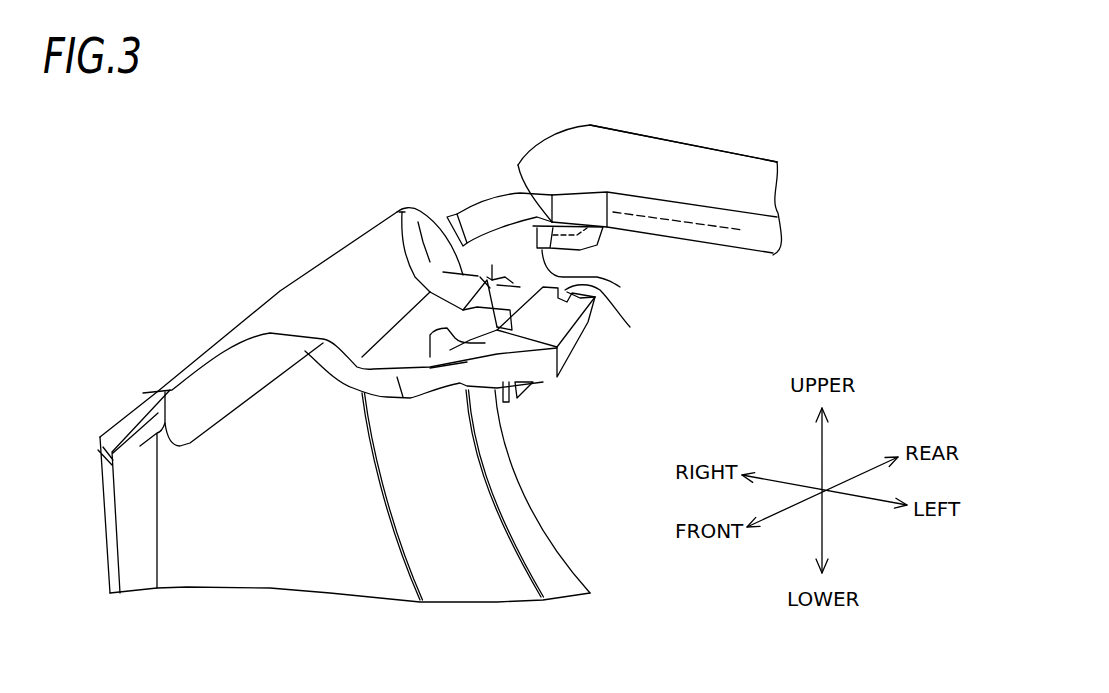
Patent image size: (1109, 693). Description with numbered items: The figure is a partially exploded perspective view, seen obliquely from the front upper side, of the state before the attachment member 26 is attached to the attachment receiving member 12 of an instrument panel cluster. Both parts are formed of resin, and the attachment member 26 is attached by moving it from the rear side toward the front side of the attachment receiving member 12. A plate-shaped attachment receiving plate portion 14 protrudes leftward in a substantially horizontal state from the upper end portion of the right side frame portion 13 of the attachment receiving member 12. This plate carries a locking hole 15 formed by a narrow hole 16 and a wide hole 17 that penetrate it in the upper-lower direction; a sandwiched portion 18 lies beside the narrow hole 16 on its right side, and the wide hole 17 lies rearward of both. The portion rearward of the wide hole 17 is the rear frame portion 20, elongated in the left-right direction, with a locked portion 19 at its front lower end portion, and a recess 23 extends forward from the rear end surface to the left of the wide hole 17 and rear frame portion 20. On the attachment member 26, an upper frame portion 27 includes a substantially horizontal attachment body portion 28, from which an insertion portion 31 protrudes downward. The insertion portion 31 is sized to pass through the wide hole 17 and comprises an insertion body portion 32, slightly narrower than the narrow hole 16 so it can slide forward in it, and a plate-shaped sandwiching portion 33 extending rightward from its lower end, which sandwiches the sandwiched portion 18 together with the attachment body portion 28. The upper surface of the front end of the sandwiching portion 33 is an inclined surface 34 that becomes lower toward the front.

The attachment receiving member 12 is at (245, 297).
The right side frame portion 13 is at (215, 350).
The attachment receiving plate portion 14 is at (568, 350).
The locking hole 15 is at (473, 146).
The narrow hole 16 is at (402, 212).
The wide hole 17 is at (463, 215).
The sandwiched portion 18 is at (437, 363).
The locked portion 19 is at (543, 372).
The rear frame portion 20 is at (517, 287).
The recess 23 is at (630, 327).
The attachment member 26 is at (787, 183).
The upper frame portion 27 is at (683, 128).
The attachment body portion 28 is at (698, 153).
The insertion portion 31 is at (683, 257).
The insertion body portion 32 is at (587, 238).
The sandwiching portion 33 is at (620, 287).
The inclined surface 34 is at (518, 165).